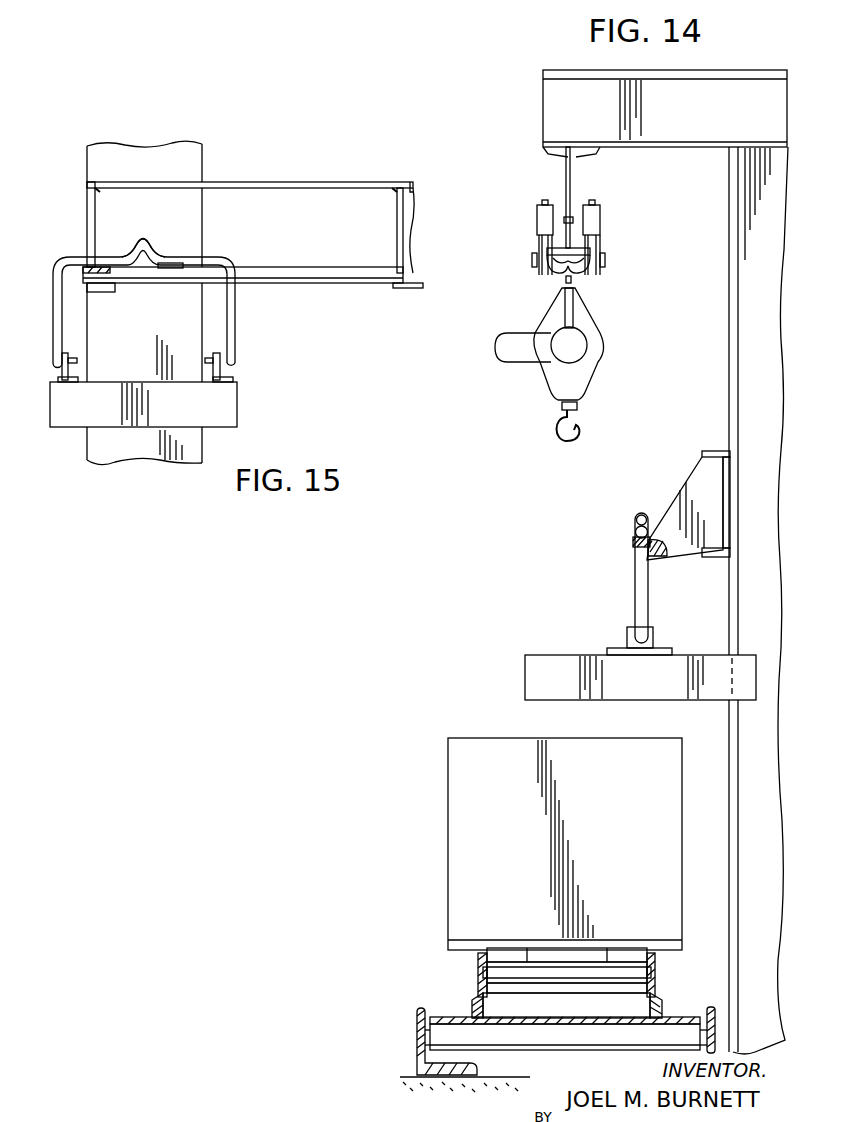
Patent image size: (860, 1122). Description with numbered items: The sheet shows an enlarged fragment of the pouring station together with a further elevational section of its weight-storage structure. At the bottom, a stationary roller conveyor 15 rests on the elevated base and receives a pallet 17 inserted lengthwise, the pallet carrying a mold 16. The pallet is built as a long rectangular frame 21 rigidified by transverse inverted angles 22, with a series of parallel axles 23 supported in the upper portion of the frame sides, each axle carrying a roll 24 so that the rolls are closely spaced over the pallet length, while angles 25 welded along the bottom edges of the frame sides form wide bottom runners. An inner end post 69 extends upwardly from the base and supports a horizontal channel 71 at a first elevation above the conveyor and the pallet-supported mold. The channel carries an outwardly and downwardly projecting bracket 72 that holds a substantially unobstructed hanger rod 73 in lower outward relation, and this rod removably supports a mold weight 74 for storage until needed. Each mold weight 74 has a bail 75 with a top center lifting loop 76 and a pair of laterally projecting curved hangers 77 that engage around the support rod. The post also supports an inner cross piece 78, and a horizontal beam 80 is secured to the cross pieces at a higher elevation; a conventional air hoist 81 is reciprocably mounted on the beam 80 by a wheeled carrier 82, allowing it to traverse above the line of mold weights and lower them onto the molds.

In FIG. 14, the stationary roller conveyor 15 is at (413, 1047).
In FIG. 14, the mold 16 is at (448, 808).
In FIG. 14, the pallet 17 is at (473, 963).
In FIG. 14, the rectangular frame 21 is at (487, 992).
In FIG. 14, the inverted angle 22 is at (547, 1010).
In FIG. 14, the axle 23 is at (480, 975).
In FIG. 14, the roll 24 is at (620, 970).
In FIG. 14, the angle 25 is at (677, 1015).
In FIG. 14, the inner end post 69 is at (729, 340).
In FIG. 15, the inner end post 69 is at (192, 157).
In FIG. 14, the horizontal channel 71 is at (705, 451).
In FIG. 15, the horizontal channel 71 is at (333, 182).
In FIG. 14, the bracket 72 is at (683, 478).
In FIG. 15, the bracket 72 is at (90, 215).
In FIG. 14, the hanger rod 73 is at (633, 542).
In FIG. 15, the hanger rod 73 is at (317, 283).
In FIG. 14, the mold weight 74 is at (556, 655).
In FIG. 15, the mold weight 74 is at (237, 405).
In FIG. 14, the bail 75 is at (635, 583).
In FIG. 15, the bail 75 is at (235, 338).
In FIG. 14, the lifting loop 76 is at (636, 518).
In FIG. 15, the lifting loop 76 is at (152, 243).
In FIG. 14, the curved hanger 77 is at (660, 545).
In FIG. 15, the curved hanger 77 is at (172, 263).
In FIG. 14, the inner cross piece 78 is at (707, 70).
In FIG. 14, the horizontal beam 80 is at (570, 180).
In FIG. 14, the air hoist 81 is at (604, 340).
In FIG. 14, the wheeled carrier 82 is at (600, 248).